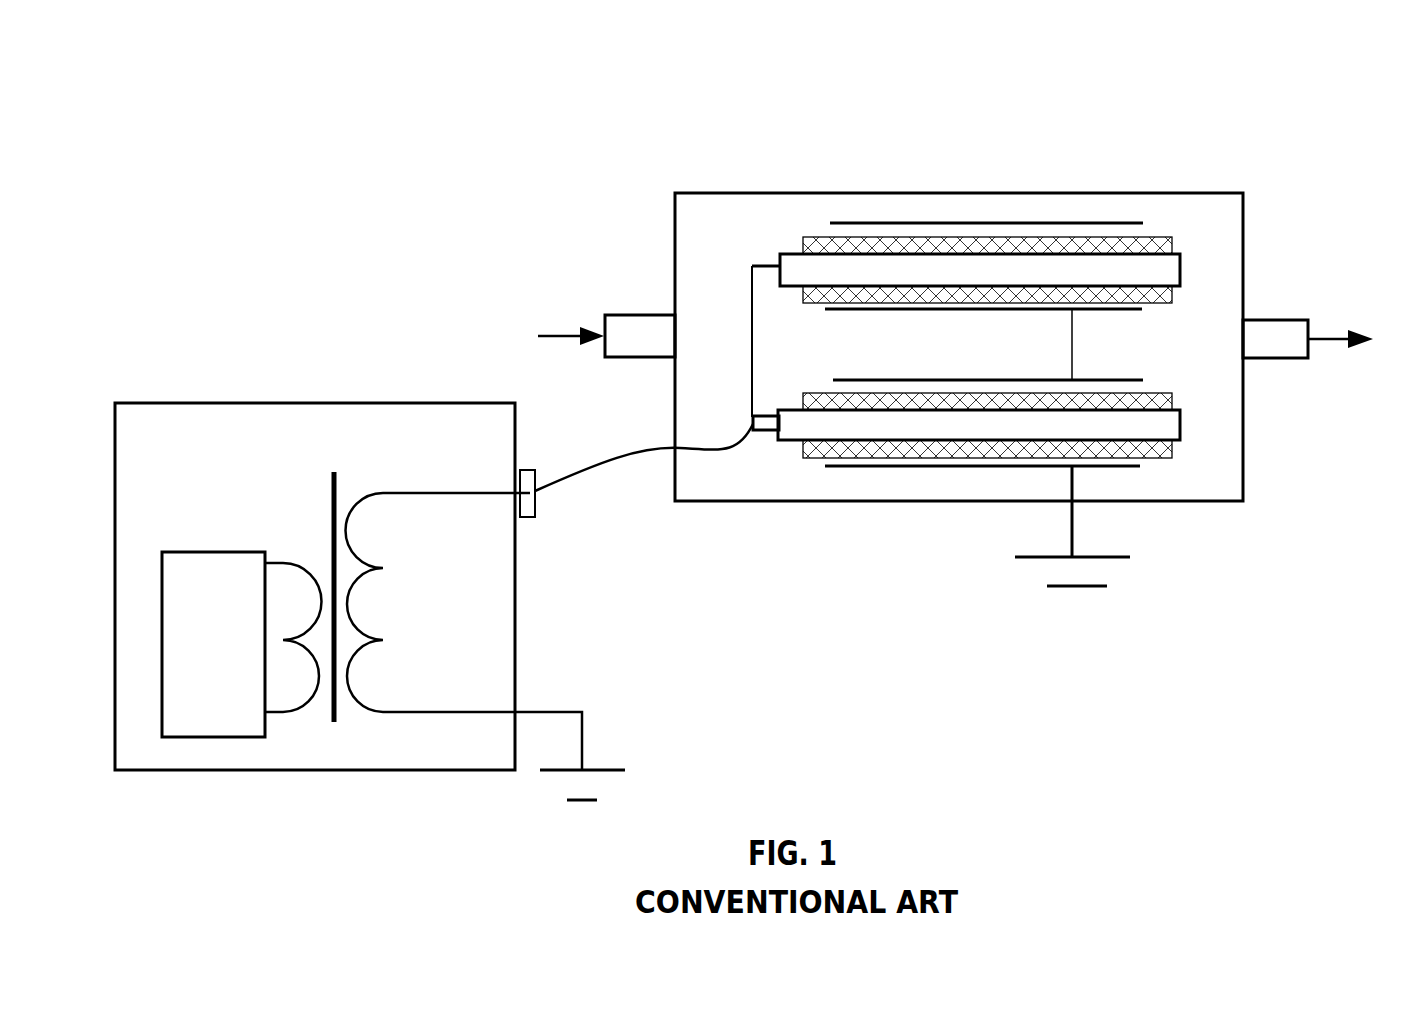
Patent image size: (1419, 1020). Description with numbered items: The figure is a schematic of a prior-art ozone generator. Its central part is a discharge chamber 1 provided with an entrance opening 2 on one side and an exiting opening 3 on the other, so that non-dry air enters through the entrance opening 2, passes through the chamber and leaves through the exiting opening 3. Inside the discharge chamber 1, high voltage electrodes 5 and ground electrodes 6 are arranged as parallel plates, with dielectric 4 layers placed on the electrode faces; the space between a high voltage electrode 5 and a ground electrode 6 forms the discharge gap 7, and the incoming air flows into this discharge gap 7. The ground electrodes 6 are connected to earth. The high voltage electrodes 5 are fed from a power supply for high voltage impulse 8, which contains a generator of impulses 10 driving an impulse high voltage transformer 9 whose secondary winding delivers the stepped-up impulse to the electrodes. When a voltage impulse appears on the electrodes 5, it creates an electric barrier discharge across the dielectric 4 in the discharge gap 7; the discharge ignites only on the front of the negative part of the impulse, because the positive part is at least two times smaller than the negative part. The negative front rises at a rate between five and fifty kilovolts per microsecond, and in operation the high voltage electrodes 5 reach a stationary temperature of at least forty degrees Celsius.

The discharge chamber 1 is at (675, 193).
The entrance opening 2 is at (606, 296).
The exiting opening 3 is at (1315, 310).
The dielectric 4 is at (1170, 238).
The high voltage electrodes 5 is at (778, 410).
The ground electrodes 6 is at (1113, 220).
The discharge gap 7 is at (825, 230).
The power supply for high voltage impulse 8 is at (434, 569).
The impulse high voltage transformer 9 is at (423, 596).
The generator of impulses 10 is at (213, 644).